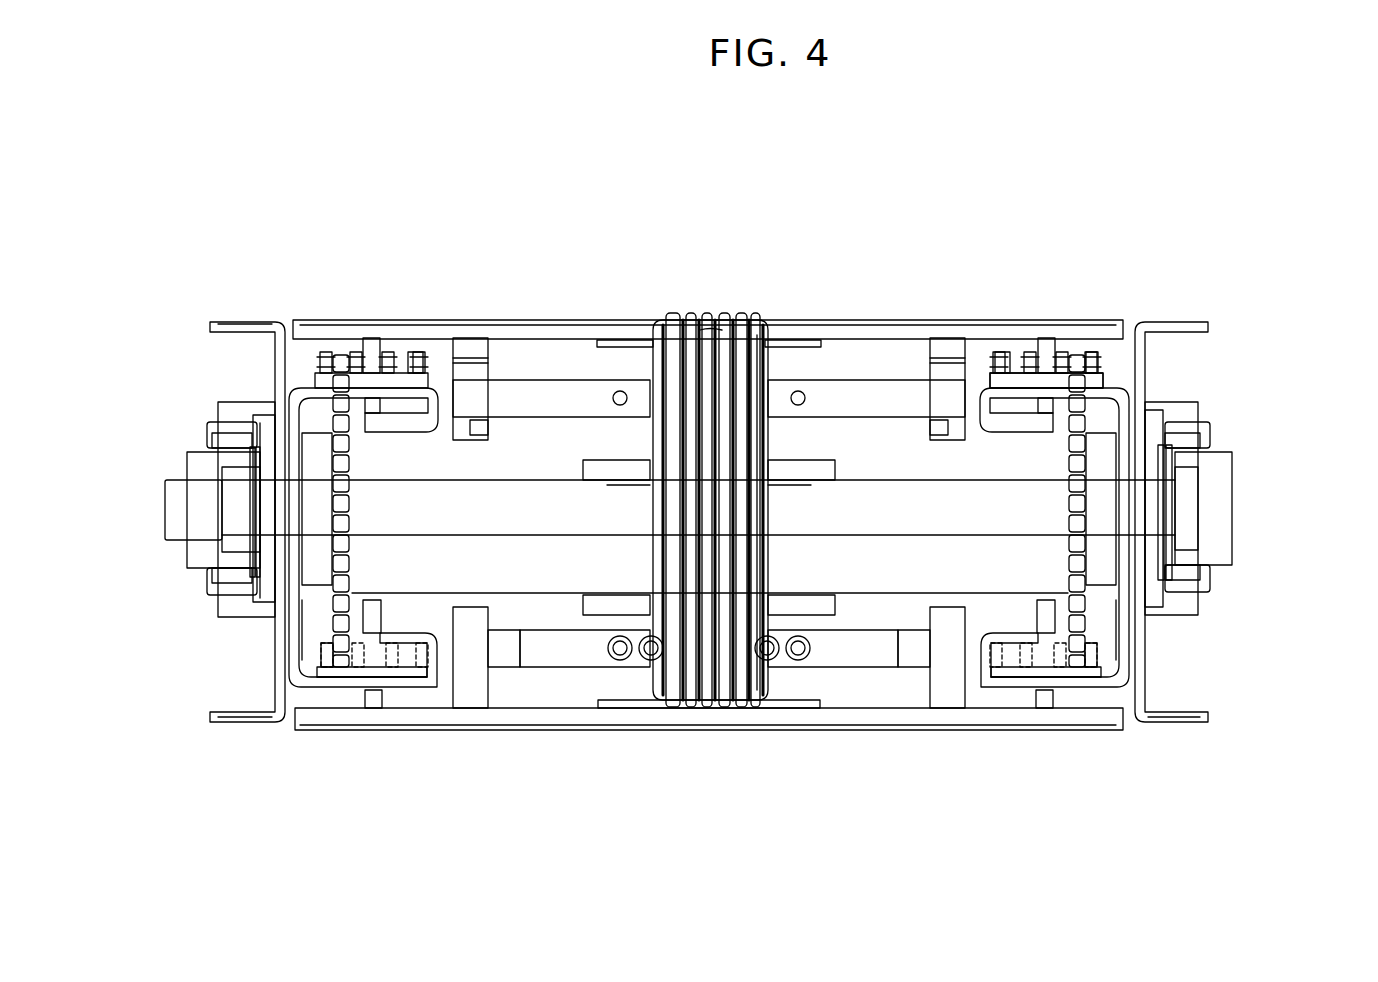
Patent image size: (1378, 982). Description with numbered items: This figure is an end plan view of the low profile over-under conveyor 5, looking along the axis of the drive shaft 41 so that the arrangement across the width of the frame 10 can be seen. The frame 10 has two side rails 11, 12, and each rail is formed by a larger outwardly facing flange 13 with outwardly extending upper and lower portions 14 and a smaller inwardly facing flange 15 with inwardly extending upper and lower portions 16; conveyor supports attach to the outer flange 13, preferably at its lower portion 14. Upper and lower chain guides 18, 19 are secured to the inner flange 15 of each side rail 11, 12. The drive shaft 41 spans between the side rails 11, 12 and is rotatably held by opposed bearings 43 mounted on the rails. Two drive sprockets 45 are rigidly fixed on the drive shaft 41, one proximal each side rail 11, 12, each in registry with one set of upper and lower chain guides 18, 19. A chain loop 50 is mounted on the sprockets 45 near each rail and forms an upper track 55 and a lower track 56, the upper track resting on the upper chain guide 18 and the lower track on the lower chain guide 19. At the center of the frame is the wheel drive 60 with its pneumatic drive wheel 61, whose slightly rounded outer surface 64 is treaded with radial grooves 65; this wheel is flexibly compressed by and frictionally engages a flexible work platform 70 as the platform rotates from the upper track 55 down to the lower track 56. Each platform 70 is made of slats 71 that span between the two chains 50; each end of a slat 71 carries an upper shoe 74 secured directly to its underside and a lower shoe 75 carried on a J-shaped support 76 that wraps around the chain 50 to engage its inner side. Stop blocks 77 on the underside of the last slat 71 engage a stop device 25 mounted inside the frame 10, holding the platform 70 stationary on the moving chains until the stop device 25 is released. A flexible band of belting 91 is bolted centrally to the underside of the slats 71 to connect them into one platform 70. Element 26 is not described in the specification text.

The low profile over-under conveyor 5 is at (508, 232).
The frame 10 is at (258, 308).
The side rail 11 is at (255, 325).
The side rail 12 is at (1195, 325).
The outwardly facing flange 13 is at (294, 620).
The upper and lower portions of outer flange 14 is at (225, 713).
The inwardly facing flange 15 is at (292, 660).
The upper and lower portions of inner flange 16 is at (320, 690).
The upper chain guide 18 is at (410, 350).
The lower chain guide 19 is at (333, 677).
The stop device 25 is at (617, 412).
The support bar 26 is at (546, 390).
The drive shaft 41 is at (170, 492).
The bearing 43 is at (200, 546).
The drive sprocket 45 is at (345, 515).
The chain loop 50 is at (1066, 350).
The upper track 55 is at (1100, 352).
The lower track 56 is at (1016, 670).
The wheel drive 60 is at (666, 310).
The drive wheel 61 is at (735, 314).
The outer surface 64 is at (745, 326).
The radial grooves 65 is at (757, 332).
The flexible work platform 70 is at (900, 312).
The slat 71 is at (950, 325).
The upper shoe 74 is at (370, 350).
The lower shoe 75 is at (354, 413).
The J-shaped support 76 is at (418, 432).
The stop block 77 is at (470, 700).
The flexible band of belting 91 is at (622, 338).